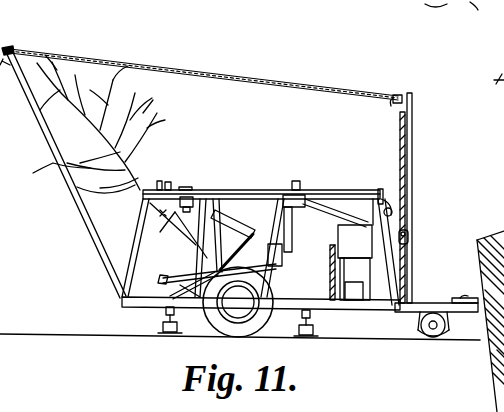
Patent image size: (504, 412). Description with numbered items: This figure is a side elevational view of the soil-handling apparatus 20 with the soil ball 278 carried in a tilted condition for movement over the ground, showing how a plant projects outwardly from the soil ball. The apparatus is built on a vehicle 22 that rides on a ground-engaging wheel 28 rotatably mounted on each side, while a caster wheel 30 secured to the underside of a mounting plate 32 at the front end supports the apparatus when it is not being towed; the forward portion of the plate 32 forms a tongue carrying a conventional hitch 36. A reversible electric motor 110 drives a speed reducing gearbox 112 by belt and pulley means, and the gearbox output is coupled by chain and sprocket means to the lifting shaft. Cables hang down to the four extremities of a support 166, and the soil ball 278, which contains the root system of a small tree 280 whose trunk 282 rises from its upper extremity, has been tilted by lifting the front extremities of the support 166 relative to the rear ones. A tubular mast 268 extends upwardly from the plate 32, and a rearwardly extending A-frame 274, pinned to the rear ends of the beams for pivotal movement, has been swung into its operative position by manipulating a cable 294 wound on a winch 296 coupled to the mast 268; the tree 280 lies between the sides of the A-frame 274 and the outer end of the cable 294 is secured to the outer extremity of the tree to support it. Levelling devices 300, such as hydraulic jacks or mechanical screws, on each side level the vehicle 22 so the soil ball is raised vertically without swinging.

The soil-handling apparatus 20 is at (263, 182).
The vehicle 22 is at (300, 233).
The ground-engaging wheel 28 is at (253, 318).
The caster wheel 30 is at (446, 330).
The mounting plate 32 is at (425, 336).
The hitch 36 is at (468, 298).
The reversible electric motor 110 is at (360, 290).
The speed reducing gearbox 112 is at (346, 236).
The support 166 is at (275, 274).
The tubular mast 268 is at (412, 142).
The A-frame 274 is at (68, 211).
The soil ball 278 is at (212, 192).
The tree 280 is at (144, 152).
The trunk 282 is at (226, 232).
The cable 294 is at (204, 74).
The winch 296 is at (410, 241).
The levelling device 300 is at (165, 325).